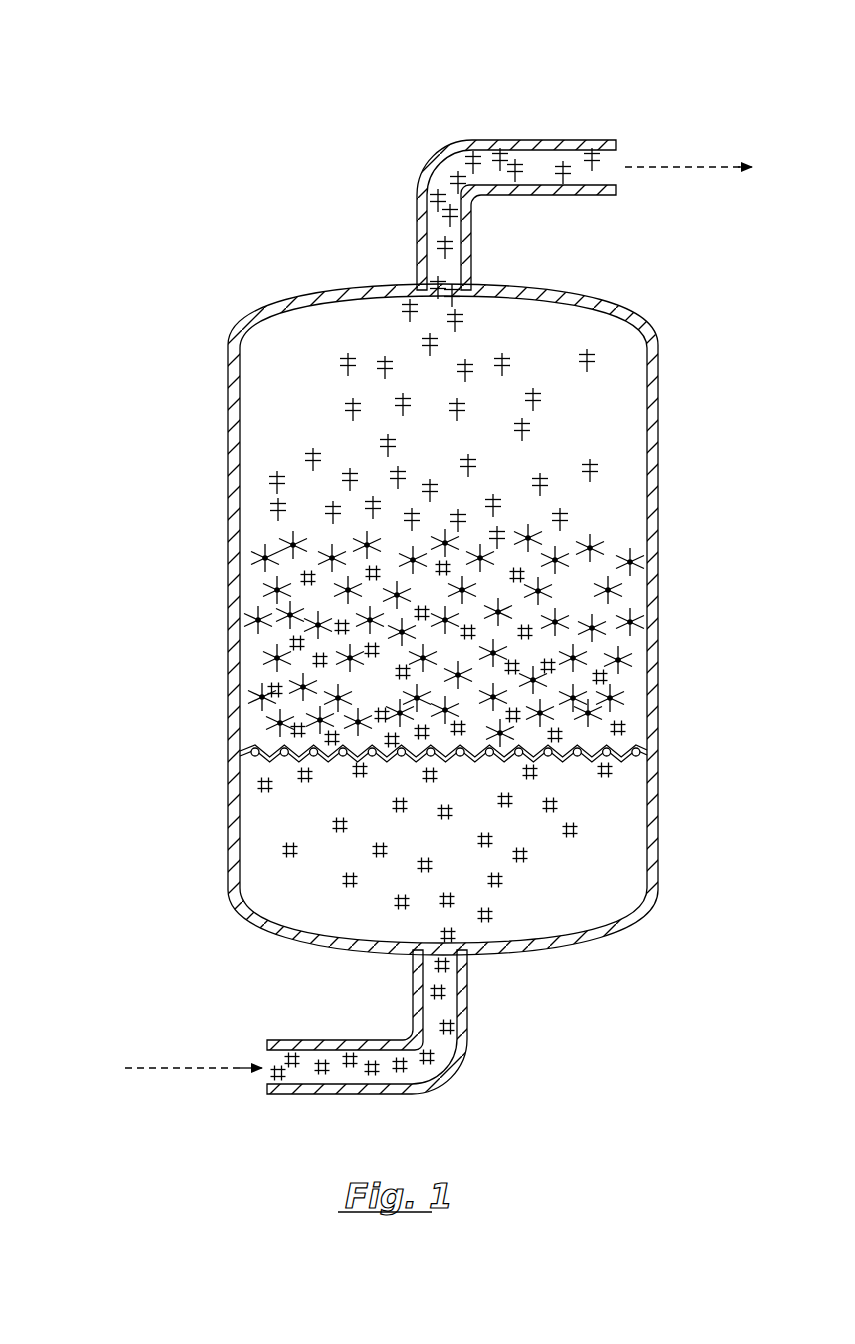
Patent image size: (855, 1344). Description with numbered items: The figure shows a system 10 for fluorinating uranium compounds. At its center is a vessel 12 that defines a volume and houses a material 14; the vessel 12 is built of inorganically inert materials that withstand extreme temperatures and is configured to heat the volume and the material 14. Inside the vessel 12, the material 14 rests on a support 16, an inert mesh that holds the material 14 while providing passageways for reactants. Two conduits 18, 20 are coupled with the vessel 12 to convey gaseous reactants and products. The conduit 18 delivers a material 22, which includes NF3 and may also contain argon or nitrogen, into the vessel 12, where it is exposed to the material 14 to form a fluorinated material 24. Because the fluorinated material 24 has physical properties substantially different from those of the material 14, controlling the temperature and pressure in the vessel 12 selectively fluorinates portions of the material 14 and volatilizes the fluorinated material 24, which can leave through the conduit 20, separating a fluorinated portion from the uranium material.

The system 10 is at (211, 136).
The vessel 12 is at (228, 645).
The material 14 is at (538, 590).
The support 16 is at (574, 758).
The conduit 18 is at (466, 1058).
The conduit 20 is at (520, 140).
The material 22 is at (600, 678).
The fluorinated material 24 is at (458, 160).